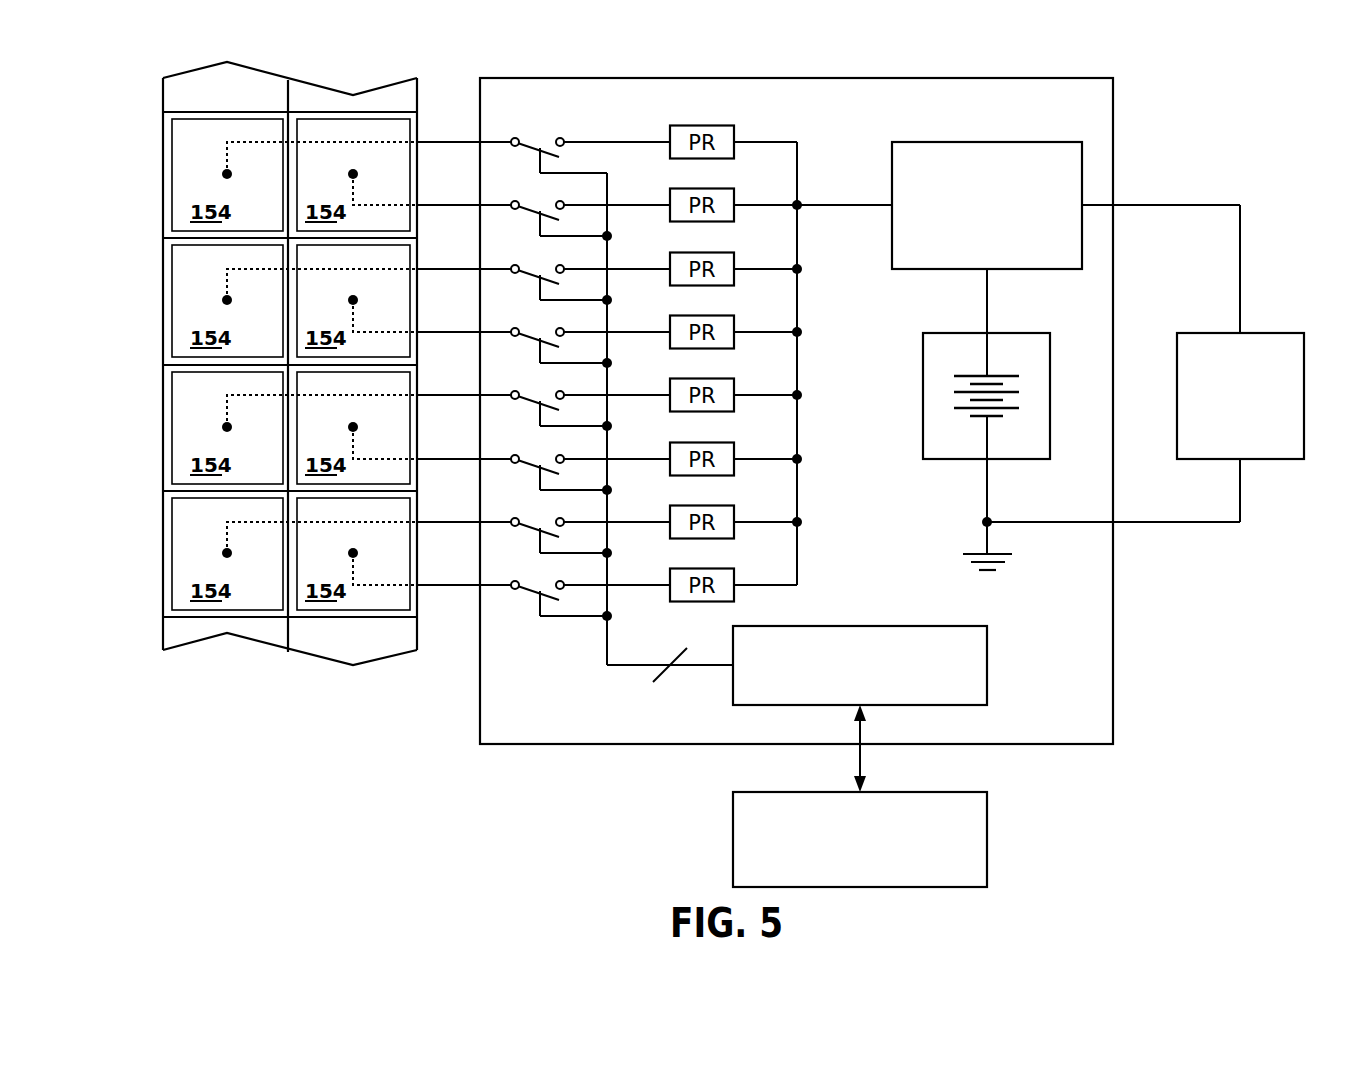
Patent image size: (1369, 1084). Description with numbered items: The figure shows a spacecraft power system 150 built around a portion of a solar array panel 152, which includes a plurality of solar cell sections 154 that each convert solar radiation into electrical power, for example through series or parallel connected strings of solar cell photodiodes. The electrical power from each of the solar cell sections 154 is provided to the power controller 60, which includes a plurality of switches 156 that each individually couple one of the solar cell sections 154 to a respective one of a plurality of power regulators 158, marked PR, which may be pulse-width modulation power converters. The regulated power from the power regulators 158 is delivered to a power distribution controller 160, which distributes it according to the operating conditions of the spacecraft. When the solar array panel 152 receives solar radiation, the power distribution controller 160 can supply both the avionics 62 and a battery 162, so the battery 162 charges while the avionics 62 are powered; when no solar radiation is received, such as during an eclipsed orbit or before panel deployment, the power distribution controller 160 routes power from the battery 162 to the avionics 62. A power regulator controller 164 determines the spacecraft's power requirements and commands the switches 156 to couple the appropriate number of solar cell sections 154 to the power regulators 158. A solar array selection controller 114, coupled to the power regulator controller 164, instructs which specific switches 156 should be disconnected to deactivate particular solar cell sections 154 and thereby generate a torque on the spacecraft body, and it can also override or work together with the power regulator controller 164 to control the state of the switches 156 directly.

The power system 150 is at (224, 841).
The solar array panel 152 is at (163, 153).
The solar cell sections 154 is at (294, 364).
The switches 156 is at (575, 410).
The power regulators 158 is at (683, 378).
The power distribution controller 160 is at (1018, 142).
The battery 162 is at (923, 378).
The power regulator controller 164 is at (858, 626).
The solar array selection controller 114 is at (987, 822).
The power controller 60 is at (1113, 123).
The avionics 62 is at (1208, 333).